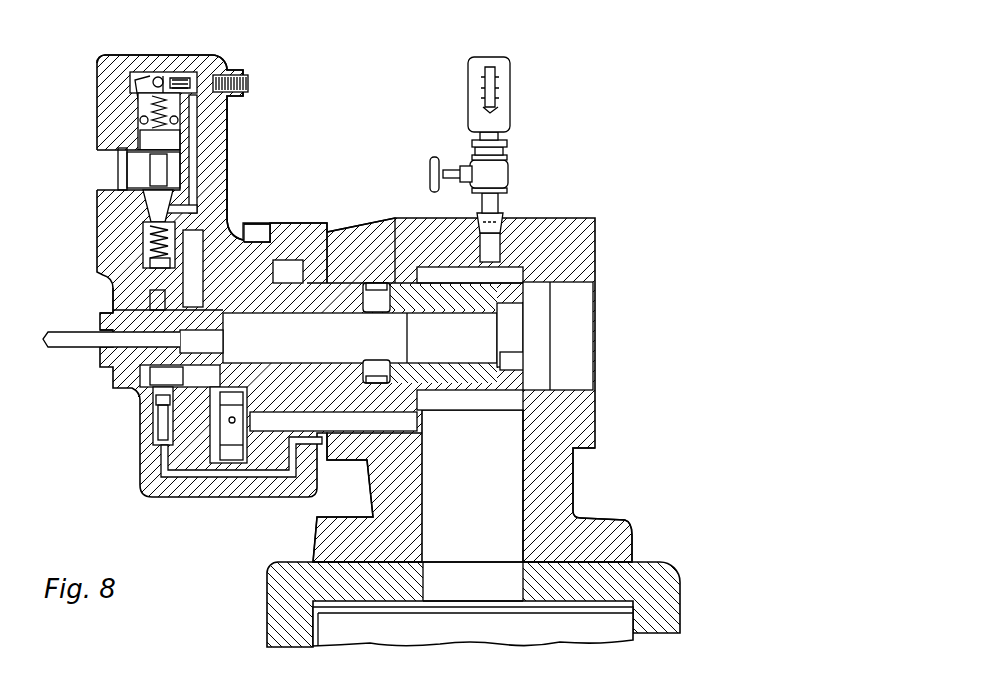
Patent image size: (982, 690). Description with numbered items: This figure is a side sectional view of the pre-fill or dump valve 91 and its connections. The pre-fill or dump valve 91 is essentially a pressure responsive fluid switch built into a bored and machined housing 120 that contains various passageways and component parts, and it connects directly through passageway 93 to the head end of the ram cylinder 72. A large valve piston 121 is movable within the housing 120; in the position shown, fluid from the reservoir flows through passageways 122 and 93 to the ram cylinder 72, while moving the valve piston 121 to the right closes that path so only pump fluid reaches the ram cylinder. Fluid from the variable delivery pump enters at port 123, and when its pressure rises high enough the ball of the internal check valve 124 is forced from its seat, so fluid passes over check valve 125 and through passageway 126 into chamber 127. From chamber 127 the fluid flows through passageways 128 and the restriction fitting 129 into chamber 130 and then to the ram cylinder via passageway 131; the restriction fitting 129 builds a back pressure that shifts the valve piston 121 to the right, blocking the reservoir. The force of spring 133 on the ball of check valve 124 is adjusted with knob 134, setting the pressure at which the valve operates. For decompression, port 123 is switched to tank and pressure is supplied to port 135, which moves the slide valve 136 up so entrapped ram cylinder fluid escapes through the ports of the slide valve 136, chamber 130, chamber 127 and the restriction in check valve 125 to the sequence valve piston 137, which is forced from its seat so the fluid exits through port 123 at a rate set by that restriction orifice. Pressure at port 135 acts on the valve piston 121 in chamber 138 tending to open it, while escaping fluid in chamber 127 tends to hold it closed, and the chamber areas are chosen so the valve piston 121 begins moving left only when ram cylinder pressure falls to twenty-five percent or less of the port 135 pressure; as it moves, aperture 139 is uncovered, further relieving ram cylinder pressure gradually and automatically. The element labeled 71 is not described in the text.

The table plate 71 is at (607, 617).
The ram cylinder 72 is at (283, 600).
The pre-fill or dump valve 91 is at (603, 107).
The passageway 93 is at (545, 552).
The housing 120 is at (102, 118).
The valve piston 121 is at (332, 350).
The passageway 122 is at (557, 323).
The port 123 is at (102, 170).
The internal check valve 124 is at (168, 70).
The check valve 125 is at (130, 238).
The passageway 126 is at (190, 243).
The chamber 127 is at (113, 297).
The passageways 128 is at (140, 383).
The restriction fitting 129 is at (163, 400).
The chamber 130 is at (243, 235).
The passageway 131 is at (367, 420).
The spring 133 is at (182, 78).
The knob 134 is at (247, 80).
The port 135 is at (265, 232).
The slide valve 136 is at (145, 418).
The sequence valve piston 137 is at (168, 142).
The chamber 138 is at (338, 240).
The aperture 139 is at (518, 257).